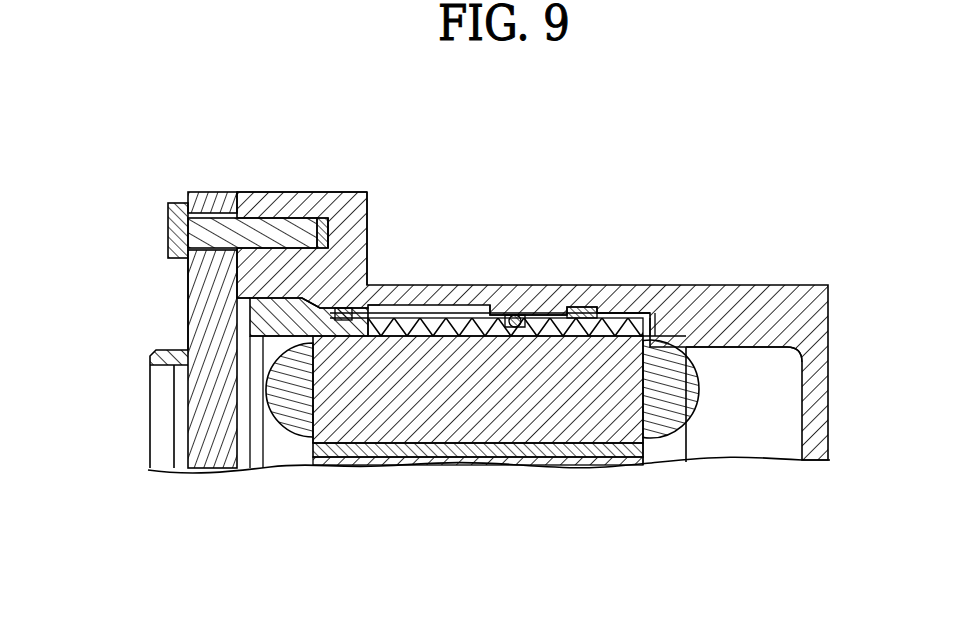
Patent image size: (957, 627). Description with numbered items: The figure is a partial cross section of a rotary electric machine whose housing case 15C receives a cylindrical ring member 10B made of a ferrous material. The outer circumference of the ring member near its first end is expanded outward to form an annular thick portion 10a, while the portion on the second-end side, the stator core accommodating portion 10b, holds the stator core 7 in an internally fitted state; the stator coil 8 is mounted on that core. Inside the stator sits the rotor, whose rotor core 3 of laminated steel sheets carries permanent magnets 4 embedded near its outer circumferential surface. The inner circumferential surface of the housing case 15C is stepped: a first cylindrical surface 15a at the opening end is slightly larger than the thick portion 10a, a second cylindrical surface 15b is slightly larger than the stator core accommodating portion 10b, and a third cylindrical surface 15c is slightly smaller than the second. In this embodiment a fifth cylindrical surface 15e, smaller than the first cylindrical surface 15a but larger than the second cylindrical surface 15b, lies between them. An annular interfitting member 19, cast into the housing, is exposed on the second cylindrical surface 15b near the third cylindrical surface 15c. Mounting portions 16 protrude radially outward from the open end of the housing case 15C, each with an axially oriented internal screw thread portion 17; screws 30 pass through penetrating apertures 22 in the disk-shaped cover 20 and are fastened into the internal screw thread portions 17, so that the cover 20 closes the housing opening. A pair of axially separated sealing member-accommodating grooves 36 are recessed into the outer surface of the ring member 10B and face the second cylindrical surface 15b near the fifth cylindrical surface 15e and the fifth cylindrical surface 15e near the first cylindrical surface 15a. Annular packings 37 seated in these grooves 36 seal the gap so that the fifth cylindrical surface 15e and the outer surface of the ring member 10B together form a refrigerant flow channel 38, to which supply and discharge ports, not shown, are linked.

The rotor core 3 is at (380, 452).
The permanent magnets 4 is at (405, 450).
The stator core 7 is at (605, 415).
The stator coil 8 is at (660, 410).
The thick portion 10a is at (280, 303).
The stator core accommodating portion 10b is at (425, 330).
The ring member 10B is at (278, 320).
The first cylindrical surface 15a is at (282, 240).
The second cylindrical surface 15b is at (622, 318).
The third cylindrical surface 15c is at (727, 360).
The housing case 15C is at (774, 284).
The fifth cylindrical surface 15e is at (424, 306).
The mounting portions 16 is at (333, 205).
The internal screw thread portion 17 is at (350, 245).
The interfitting member 19 is at (595, 306).
The cover 20 is at (187, 330).
The penetrating apertures 22 is at (206, 218).
The screws 30 is at (178, 233).
The sealing member-accommodating grooves 36 is at (384, 300).
The annular packings 37 is at (374, 283).
The refrigerant flow channel 38 is at (463, 312).